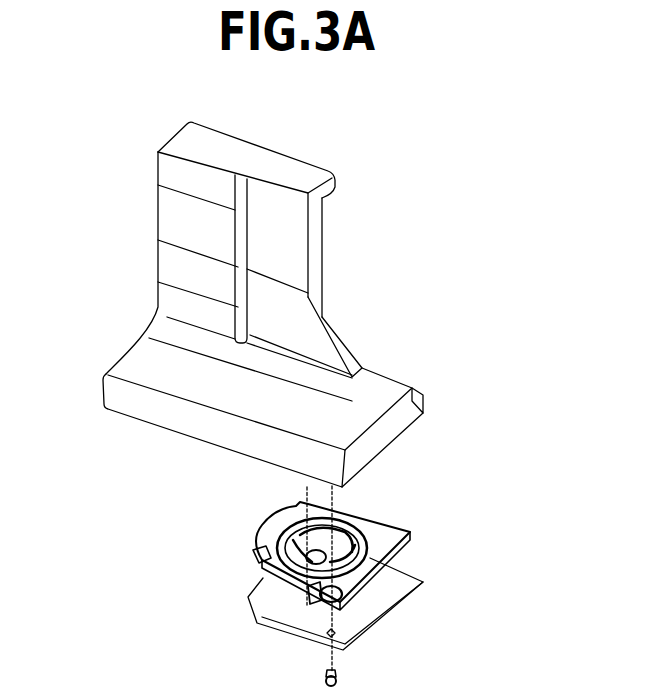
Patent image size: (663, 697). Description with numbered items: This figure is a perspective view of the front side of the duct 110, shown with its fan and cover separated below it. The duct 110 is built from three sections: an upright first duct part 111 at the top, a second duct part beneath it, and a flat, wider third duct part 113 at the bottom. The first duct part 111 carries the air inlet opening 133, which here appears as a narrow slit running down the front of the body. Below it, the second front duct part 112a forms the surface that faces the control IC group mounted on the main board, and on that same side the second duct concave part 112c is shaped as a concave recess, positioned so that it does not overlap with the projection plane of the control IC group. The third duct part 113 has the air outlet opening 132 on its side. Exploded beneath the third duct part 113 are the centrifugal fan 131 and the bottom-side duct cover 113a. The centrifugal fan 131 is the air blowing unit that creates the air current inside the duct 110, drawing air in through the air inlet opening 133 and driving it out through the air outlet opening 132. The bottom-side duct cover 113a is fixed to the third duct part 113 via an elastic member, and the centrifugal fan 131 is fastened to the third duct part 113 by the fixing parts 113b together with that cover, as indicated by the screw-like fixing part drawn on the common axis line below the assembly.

The duct 110 is at (420, 173).
The first duct part 111 is at (277, 170).
The second front duct part 112a is at (193, 227).
The second duct concave part 112c is at (297, 313).
The third duct part 113 is at (183, 380).
The bottom-side duct cover 113a is at (375, 602).
The fixing parts 113b is at (340, 682).
The centrifugal fan 131 is at (383, 520).
The air outlet opening 132 is at (393, 432).
The air inlet opening 133 is at (230, 132).